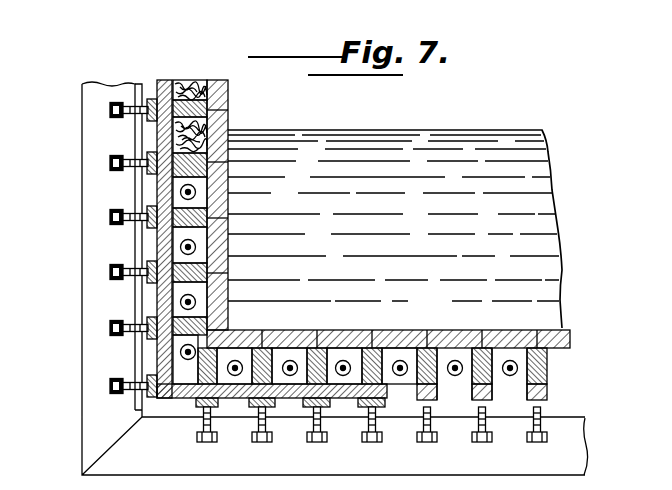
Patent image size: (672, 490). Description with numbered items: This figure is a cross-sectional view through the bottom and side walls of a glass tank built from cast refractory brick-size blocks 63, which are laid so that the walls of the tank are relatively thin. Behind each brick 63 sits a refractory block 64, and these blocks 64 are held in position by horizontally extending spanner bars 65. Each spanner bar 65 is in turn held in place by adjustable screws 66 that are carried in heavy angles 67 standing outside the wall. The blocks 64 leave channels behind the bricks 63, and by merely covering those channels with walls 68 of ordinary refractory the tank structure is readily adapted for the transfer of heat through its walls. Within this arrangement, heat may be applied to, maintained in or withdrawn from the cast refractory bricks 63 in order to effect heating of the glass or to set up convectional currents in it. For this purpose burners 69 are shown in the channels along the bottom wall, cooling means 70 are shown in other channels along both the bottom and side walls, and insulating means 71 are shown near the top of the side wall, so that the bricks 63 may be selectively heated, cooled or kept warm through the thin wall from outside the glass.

The cast refractory brick-size blocks 63 is at (228, 122).
The refractory blocks 64 is at (200, 368).
The spanner bars 65 is at (152, 158).
The adjustable screws 66 is at (133, 185).
The heavy angles 67 is at (138, 198).
The walls of ordinary refractory 68 is at (179, 194).
The burners 69 is at (235, 376).
The cooling means 70 is at (176, 245).
The insulating means 71 is at (191, 82).